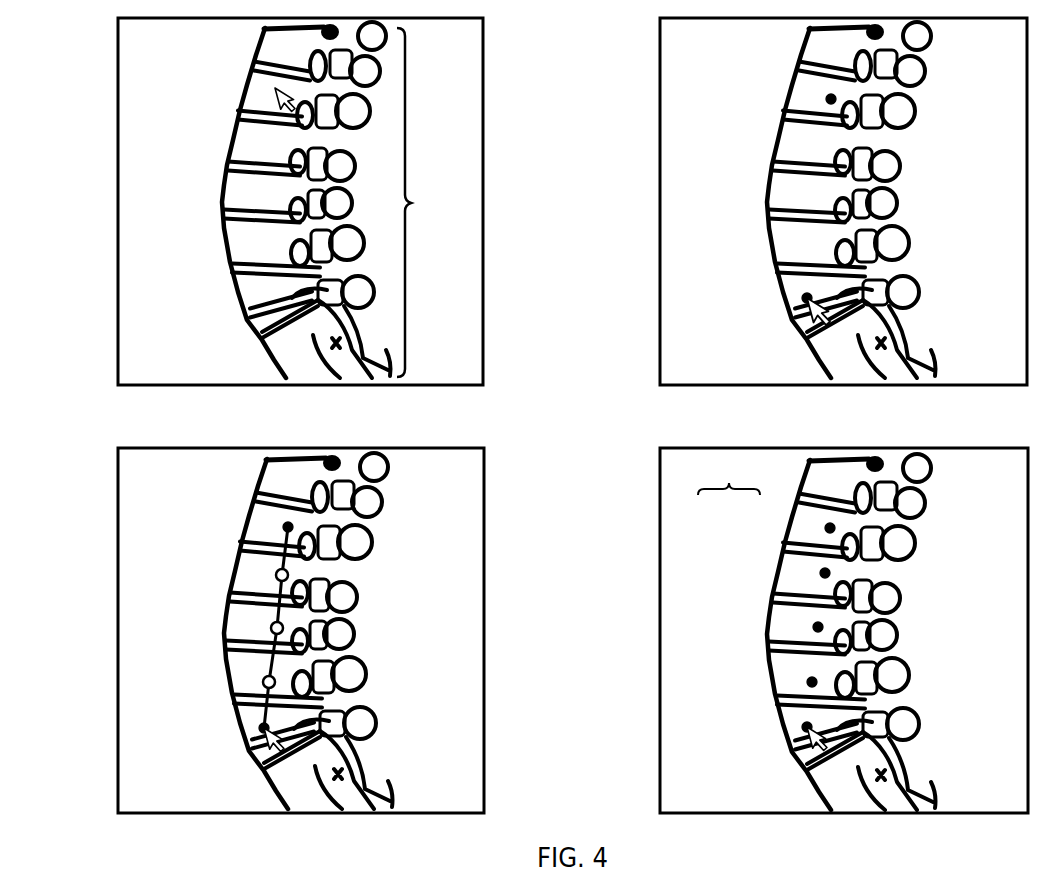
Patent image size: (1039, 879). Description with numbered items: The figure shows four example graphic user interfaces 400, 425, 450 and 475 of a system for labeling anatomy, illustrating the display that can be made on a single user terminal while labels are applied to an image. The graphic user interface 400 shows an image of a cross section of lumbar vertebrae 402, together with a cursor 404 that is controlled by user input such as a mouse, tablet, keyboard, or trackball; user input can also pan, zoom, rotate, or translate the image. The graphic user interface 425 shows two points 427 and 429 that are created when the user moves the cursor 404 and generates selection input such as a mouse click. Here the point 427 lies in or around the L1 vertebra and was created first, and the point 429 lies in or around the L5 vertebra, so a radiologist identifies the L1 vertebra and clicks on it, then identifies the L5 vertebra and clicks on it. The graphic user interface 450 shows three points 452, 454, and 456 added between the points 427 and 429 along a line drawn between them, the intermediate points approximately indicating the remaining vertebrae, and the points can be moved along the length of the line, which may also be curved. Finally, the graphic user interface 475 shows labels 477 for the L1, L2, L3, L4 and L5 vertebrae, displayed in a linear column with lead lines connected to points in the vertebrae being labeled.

The graphic user interface 400 is at (118, 202).
The lumbar vertebrae 402 is at (423, 202).
The cursor 404 is at (279, 100).
The graphic user interface 425 is at (660, 203).
The point 427 is at (826, 98).
The point 429 is at (802, 297).
The graphic user interface 450 is at (118, 632).
The point 452 is at (276, 574).
The point 454 is at (271, 627).
The point 456 is at (263, 681).
The graphic user interface 475 is at (660, 633).
The labels 477 is at (729, 474).
The L1 vertebra L1 is at (826, 527).
The L2 vertebra L2 is at (821, 572).
The L3 vertebra L3 is at (814, 626).
The L4 vertebra L4 is at (808, 681).
The L5 vertebra L5 is at (803, 726).